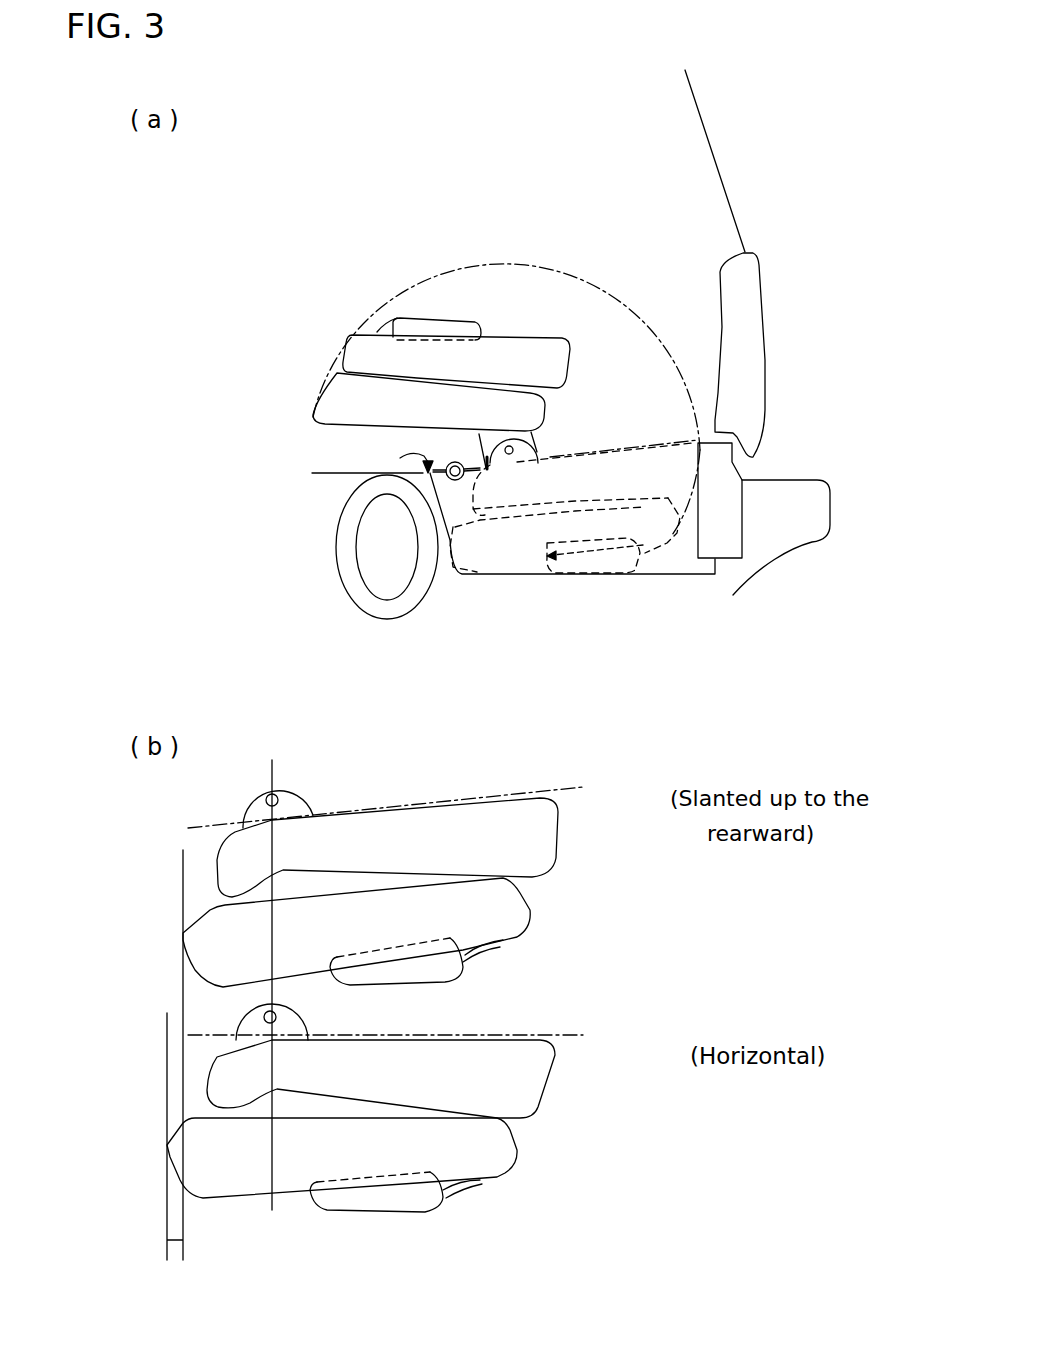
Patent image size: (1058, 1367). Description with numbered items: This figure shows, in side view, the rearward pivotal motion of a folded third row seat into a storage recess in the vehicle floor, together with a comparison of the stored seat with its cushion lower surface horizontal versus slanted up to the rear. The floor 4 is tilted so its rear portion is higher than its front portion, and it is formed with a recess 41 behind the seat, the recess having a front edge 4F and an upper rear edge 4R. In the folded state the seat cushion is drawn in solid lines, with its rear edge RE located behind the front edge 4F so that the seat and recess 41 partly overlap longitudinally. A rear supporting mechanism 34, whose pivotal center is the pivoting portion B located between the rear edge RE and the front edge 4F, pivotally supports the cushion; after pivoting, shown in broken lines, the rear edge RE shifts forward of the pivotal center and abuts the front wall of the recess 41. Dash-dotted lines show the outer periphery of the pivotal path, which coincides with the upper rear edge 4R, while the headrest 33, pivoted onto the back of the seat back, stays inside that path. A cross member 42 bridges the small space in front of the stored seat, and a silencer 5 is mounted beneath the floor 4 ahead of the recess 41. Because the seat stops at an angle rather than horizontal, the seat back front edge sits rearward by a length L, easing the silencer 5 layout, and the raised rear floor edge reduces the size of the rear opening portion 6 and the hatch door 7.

The floor 4 is at (330, 474).
The front edge of the recess 4F is at (400, 458).
The upper rear edge of the recess 4R is at (712, 428).
The silencer 5 is at (393, 607).
The opening portion 6 is at (723, 238).
The hatch door 7 is at (757, 370).
The headrest 33 is at (406, 320).
The rear supporting mechanism 34 is at (527, 440).
The recess 41 is at (650, 574).
The cross member 42 is at (453, 461).
The rear edge of the seat cushion RE is at (537, 410).
The pivoting portion B is at (511, 464).
The forward direction F is at (595, 556).
The length L is at (175, 1260).